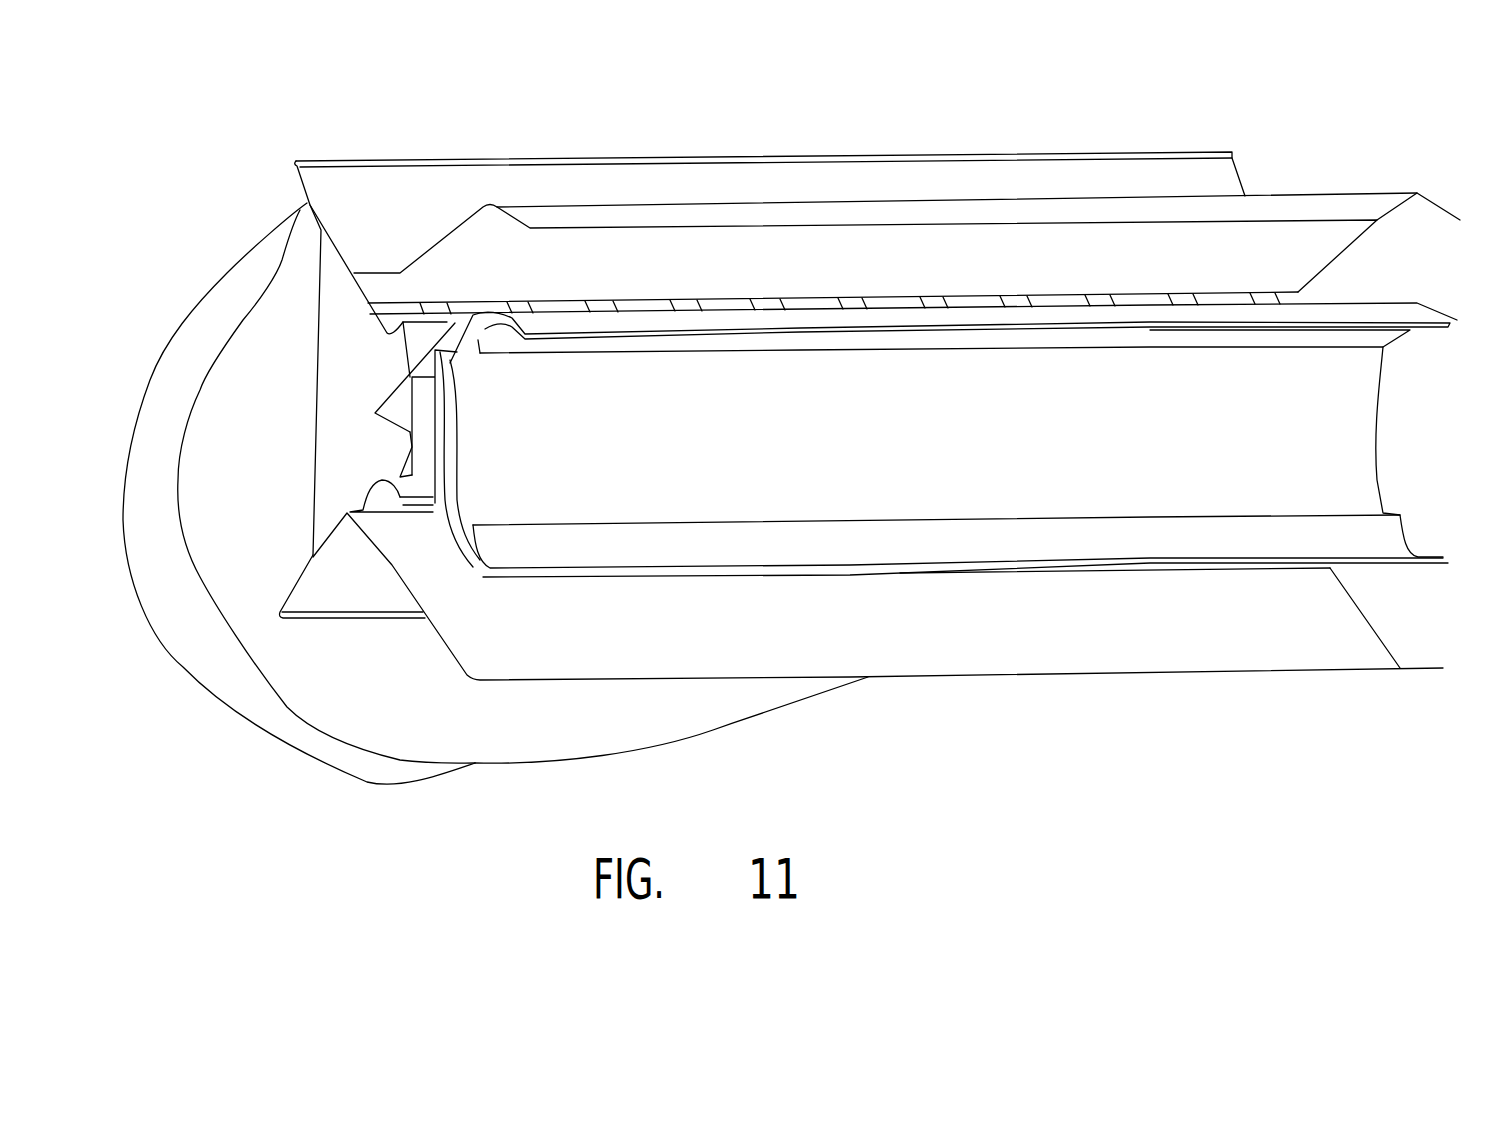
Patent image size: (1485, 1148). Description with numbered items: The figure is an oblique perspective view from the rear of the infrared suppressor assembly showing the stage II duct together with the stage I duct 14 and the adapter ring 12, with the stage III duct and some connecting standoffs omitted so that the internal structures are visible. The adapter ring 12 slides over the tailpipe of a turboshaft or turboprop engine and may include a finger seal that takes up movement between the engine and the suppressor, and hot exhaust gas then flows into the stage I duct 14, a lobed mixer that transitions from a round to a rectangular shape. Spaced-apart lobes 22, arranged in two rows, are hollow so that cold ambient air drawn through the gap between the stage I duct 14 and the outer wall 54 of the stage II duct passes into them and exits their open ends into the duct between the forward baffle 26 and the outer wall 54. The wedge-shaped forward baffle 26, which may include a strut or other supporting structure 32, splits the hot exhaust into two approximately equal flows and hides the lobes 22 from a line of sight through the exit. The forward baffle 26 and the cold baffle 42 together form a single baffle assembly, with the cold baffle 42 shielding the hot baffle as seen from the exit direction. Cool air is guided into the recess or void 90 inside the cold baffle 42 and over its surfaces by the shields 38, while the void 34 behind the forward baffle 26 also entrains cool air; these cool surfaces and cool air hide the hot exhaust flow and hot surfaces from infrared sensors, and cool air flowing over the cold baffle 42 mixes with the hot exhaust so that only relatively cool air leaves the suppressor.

The adapter ring 12 is at (216, 303).
The stage I duct 14 is at (313, 680).
The lobes 22 is at (670, 307).
The forward baffle 26 is at (410, 424).
The supporting structure 32 is at (427, 467).
The void 34 is at (385, 398).
The shields 38 is at (512, 347).
The cold baffle 42 is at (1000, 447).
The outer wall 54 is at (410, 185).
The recess or void 90 is at (478, 462).